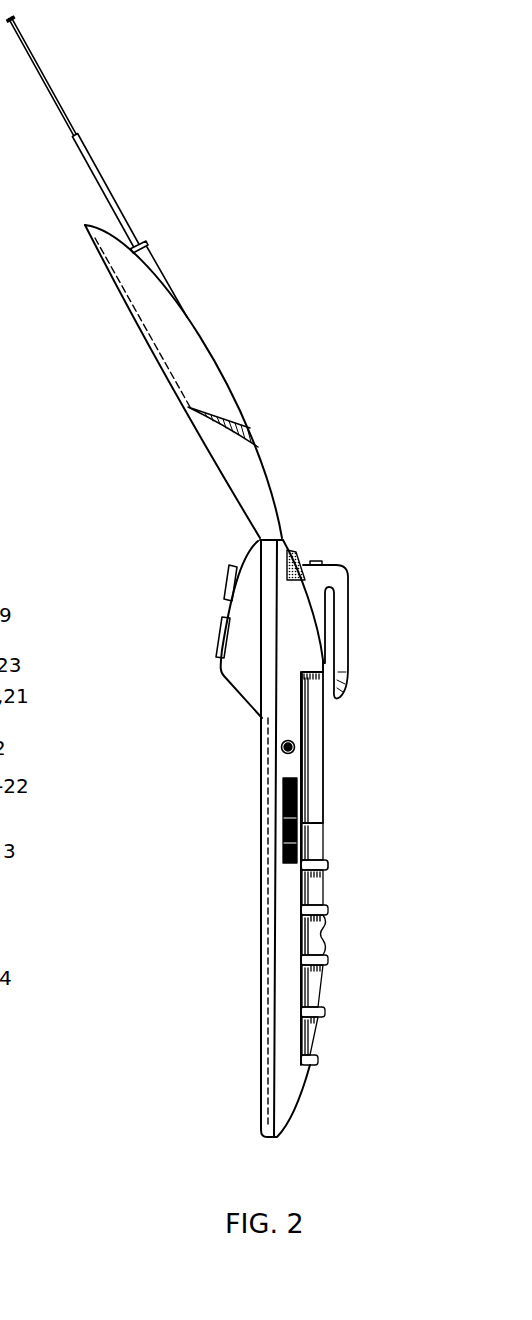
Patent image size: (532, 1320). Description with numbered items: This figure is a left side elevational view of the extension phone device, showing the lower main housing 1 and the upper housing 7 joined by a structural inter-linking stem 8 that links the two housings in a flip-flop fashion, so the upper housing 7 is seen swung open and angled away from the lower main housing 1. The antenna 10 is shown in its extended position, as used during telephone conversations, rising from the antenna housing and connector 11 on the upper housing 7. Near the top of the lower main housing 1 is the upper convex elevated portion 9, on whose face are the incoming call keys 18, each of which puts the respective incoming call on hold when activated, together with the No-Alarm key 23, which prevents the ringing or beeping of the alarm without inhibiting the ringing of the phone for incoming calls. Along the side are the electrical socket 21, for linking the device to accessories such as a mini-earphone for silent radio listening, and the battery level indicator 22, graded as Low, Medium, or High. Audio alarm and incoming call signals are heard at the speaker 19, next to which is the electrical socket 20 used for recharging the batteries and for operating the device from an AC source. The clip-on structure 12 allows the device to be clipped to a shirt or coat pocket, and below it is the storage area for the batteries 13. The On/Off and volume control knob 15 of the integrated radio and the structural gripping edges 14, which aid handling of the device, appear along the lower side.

The lower main housing 1 is at (262, 842).
The upper housing 7 is at (162, 368).
The structural inter-linking stem 8 is at (257, 483).
The upper convex elevated portion 9 is at (232, 678).
The antenna 10 is at (93, 152).
The antenna housing and connector 11 is at (150, 255).
The clip-on structure 12 is at (345, 608).
The storage area for the batteries 13 is at (315, 735).
The structural gripping edges 14 is at (328, 863).
The On/Off and volume control knob 15 is at (327, 933).
The incoming call keys 18 is at (229, 583).
The speaker 19 is at (295, 558).
The electrical socket 20 is at (317, 562).
The electrical socket 21 is at (280, 748).
The battery level indicator 22 is at (282, 857).
The No-Alarm key 23 is at (218, 640).